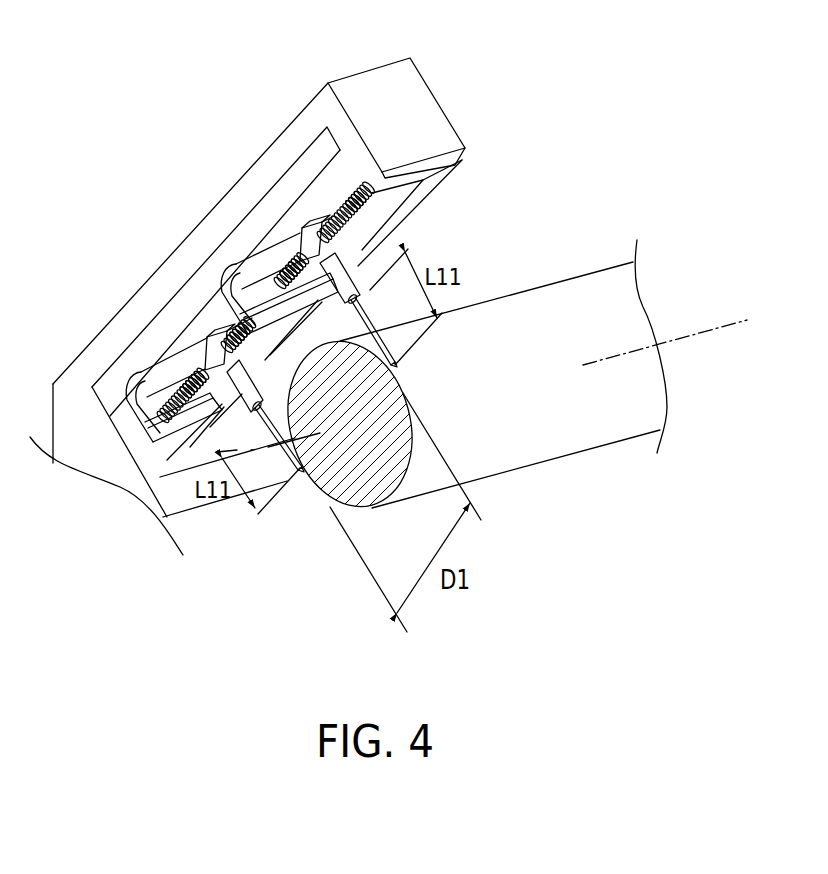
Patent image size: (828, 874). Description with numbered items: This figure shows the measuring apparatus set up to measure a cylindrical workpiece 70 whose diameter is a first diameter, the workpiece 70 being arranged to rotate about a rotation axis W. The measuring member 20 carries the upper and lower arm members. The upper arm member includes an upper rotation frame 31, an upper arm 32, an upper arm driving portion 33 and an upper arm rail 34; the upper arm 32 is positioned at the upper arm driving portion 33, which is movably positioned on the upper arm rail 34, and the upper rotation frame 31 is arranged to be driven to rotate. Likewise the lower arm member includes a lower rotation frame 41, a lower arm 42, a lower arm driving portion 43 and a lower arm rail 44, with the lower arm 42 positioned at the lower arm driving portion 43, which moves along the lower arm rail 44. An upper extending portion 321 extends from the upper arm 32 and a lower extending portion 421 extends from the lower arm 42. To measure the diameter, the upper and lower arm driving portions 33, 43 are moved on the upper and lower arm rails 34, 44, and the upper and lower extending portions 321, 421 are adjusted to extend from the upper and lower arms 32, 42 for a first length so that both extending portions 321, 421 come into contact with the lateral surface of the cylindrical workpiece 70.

The measuring member 20 is at (421, 114).
The upper rotation frame 31 is at (305, 202).
The upper arm 32 is at (345, 275).
The upper extending portion 321 is at (397, 367).
The upper arm driving portion 33 is at (303, 240).
The upper arm rail 34 is at (265, 265).
The lower rotation frame 41 is at (195, 328).
The lower arm 42 is at (225, 405).
The lower extending portion 421 is at (300, 472).
The lower arm driving portion 43 is at (210, 355).
The lower arm rail 44 is at (165, 432).
The workpiece 70 is at (582, 303).
The rotation axis W is at (703, 335).